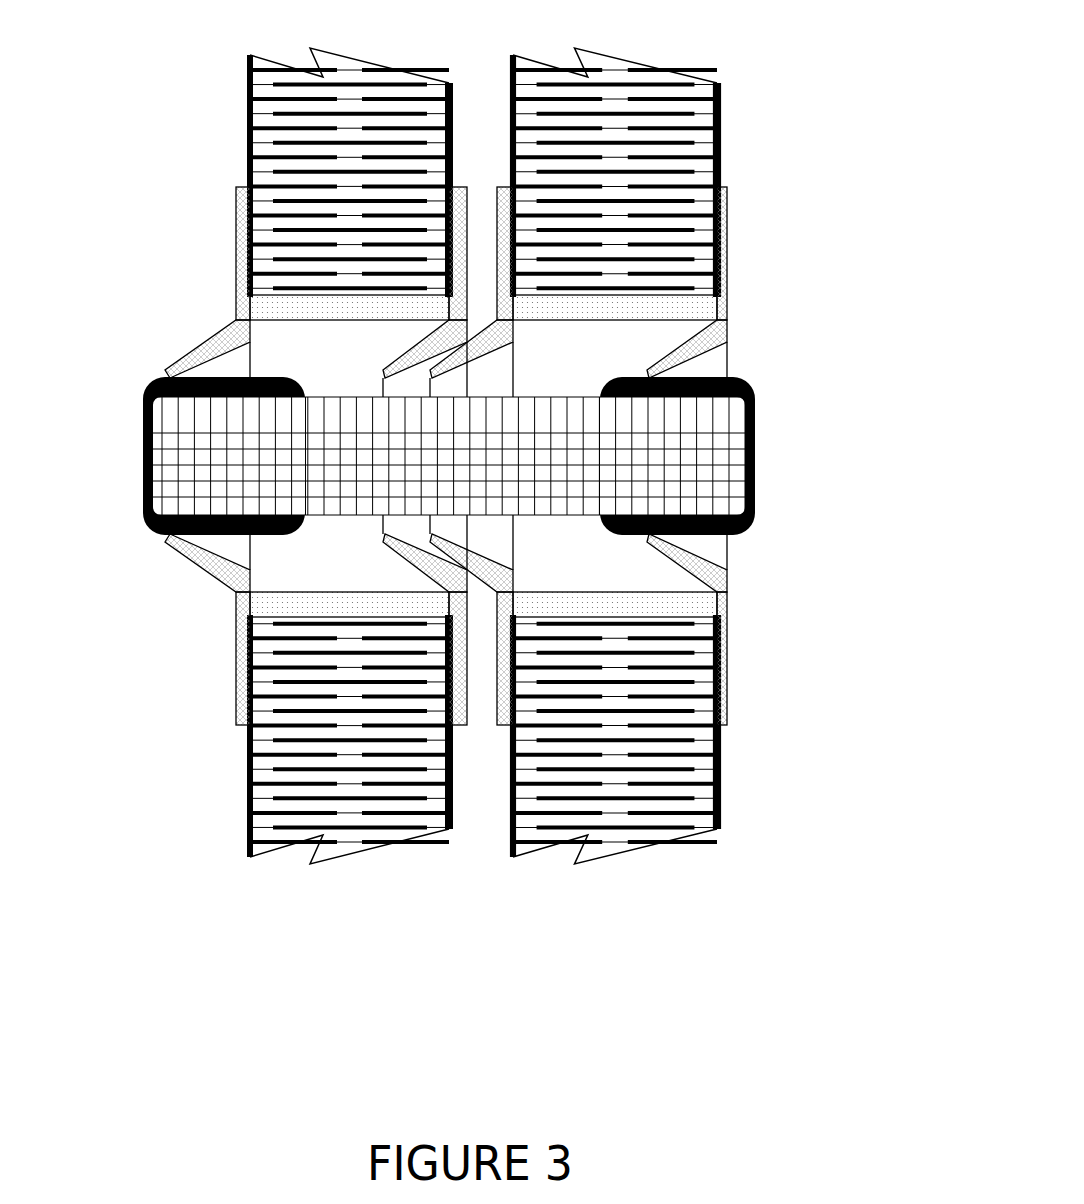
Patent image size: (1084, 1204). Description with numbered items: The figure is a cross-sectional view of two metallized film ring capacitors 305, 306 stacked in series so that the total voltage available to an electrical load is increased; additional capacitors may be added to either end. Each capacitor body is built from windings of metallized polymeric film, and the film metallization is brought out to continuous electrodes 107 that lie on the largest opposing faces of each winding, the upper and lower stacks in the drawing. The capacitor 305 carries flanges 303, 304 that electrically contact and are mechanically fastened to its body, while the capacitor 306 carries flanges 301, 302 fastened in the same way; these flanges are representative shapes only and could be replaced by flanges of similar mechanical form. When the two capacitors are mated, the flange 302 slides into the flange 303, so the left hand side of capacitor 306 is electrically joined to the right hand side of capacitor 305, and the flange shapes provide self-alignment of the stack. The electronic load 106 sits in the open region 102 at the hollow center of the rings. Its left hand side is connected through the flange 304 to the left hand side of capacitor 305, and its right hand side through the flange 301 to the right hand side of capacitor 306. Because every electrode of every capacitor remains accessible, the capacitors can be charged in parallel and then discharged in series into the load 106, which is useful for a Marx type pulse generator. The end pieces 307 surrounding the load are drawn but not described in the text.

The hollow center 102 is at (488, 456).
The electronic load 106 is at (683, 475).
The electrodes 107 is at (248, 123).
The flange 301 is at (712, 573).
The flange 302 is at (488, 573).
The flange 303 is at (417, 567).
The flange 304 is at (230, 582).
The capacitor 305 is at (473, 923).
The capacitor 306 is at (745, 923).
The core end caps 307 is at (145, 411).